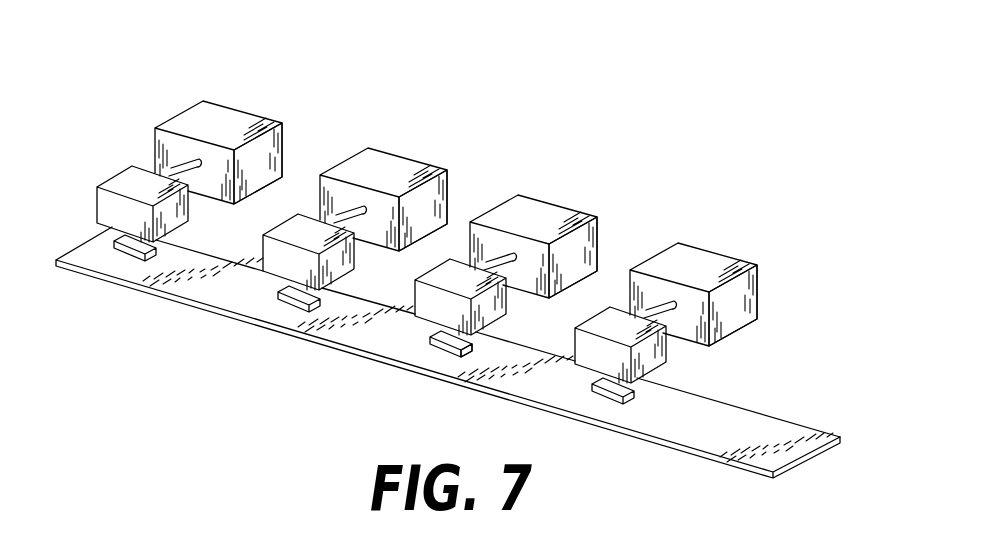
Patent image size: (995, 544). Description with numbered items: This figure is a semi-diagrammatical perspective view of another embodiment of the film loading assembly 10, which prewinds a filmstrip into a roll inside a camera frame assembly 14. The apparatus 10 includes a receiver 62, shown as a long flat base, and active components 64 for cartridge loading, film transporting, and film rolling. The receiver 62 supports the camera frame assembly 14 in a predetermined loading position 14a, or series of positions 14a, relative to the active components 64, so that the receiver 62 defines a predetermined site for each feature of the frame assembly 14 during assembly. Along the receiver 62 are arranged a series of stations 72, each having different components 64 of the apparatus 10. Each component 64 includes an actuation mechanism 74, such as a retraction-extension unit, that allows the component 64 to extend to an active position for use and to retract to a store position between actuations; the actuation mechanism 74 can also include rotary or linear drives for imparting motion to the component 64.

The film loading assembly 10 is at (468, 263).
The camera frame assembly 14 is at (443, 349).
The loading position 14a is at (468, 358).
The receiver 62 is at (790, 420).
The active components 64 is at (118, 173).
The stations 72 is at (232, 102).
The actuation mechanism 74 is at (283, 141).